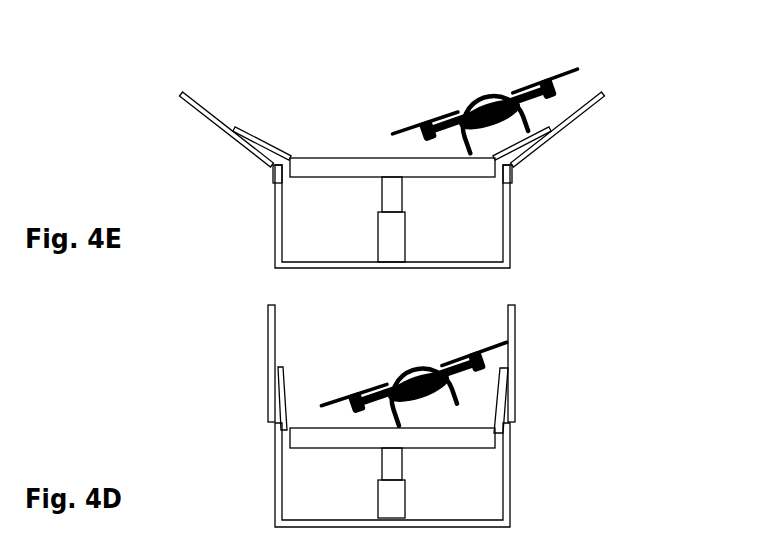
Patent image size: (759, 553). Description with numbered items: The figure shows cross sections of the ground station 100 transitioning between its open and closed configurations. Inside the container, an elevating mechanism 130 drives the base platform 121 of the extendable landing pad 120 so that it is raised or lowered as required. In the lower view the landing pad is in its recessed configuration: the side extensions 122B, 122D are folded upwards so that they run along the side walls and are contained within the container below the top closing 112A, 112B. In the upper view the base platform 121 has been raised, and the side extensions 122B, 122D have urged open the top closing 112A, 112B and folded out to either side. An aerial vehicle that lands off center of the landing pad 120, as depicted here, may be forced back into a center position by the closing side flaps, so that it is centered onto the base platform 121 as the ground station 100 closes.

In FIG. 4E, the ground station 100 is at (278, 212).
In FIG. 4D, the ground station 100 is at (278, 458).
In FIG. 4E, the top closing 112A is at (203, 118).
In FIG. 4D, the top closing 112A is at (267, 333).
In FIG. 4E, the top closing 112B is at (573, 125).
In FIG. 4D, the top closing 112B is at (513, 333).
In FIG. 4E, the extendable landing pad 120 is at (418, 82).
In FIG. 4E, the base platform 121 is at (335, 162).
In FIG. 4D, the base platform 121 is at (300, 427).
In FIG. 4E, the side extension 122B is at (527, 137).
In FIG. 4E, the side extension 122D is at (250, 127).
In FIG. 4E, the elevating mechanism 130 is at (402, 192).
In FIG. 4D, the elevating mechanism 130 is at (402, 462).